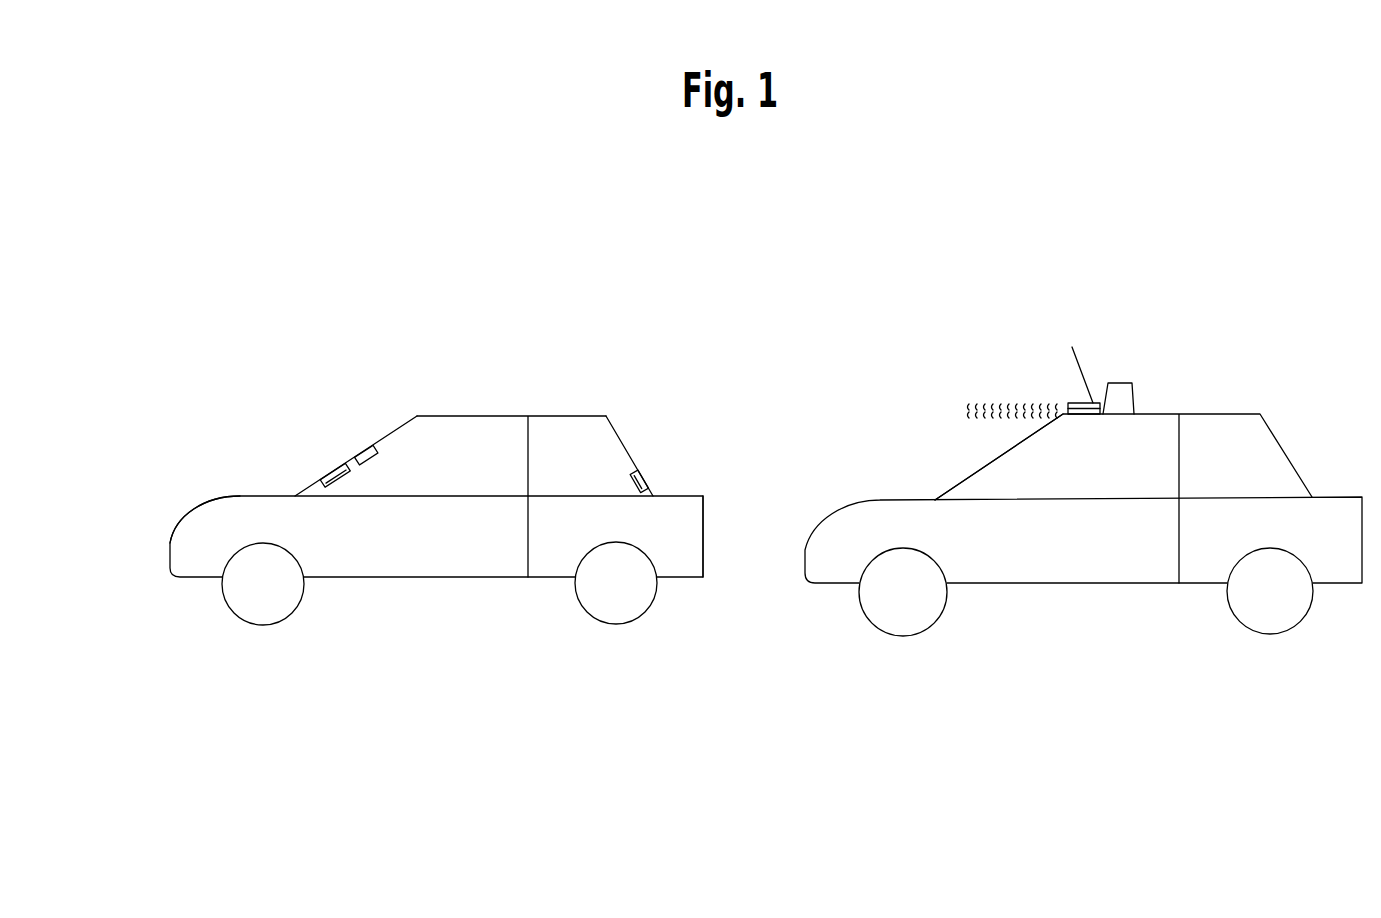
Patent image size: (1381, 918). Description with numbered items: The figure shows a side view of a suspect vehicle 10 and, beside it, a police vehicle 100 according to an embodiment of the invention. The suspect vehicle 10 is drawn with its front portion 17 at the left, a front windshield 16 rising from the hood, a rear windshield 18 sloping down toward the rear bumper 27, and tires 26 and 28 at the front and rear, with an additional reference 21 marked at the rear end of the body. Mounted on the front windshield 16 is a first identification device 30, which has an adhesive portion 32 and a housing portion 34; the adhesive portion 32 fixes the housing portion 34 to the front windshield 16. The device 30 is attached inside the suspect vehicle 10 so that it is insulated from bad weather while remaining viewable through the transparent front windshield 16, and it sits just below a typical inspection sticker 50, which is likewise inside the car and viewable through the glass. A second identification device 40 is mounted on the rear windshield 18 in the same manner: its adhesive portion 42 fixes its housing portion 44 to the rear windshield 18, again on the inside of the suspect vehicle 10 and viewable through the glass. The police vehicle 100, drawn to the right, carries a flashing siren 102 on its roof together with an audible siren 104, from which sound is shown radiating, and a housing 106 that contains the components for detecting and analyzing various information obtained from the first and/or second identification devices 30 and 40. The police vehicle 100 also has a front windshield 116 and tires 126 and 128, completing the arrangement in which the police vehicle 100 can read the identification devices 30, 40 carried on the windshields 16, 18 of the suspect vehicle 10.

The suspect vehicle 10 is at (431, 501).
The front windshield 16 is at (403, 422).
The front portion 17 is at (173, 535).
The rear windshield 18 is at (628, 433).
The rear bumper 21 is at (703, 540).
The tire 26 is at (252, 610).
The rear bumper 27 is at (450, 543).
The tire 28 is at (617, 607).
The first identification device 30 is at (321, 445).
The adhesive portion 32 is at (320, 478).
The housing portion 34 is at (340, 482).
The second identification device 40 is at (647, 457).
The adhesive portion 42 is at (640, 473).
The housing portion 44 is at (630, 472).
The inspection sticker 50 is at (363, 452).
The police vehicle 100 is at (1063, 495).
The flashing siren 102 is at (1128, 382).
The audible siren 104 is at (1057, 403).
The housing 106 is at (1080, 413).
The front windshield 116 is at (992, 455).
The tire 126 is at (906, 612).
The tire 128 is at (1275, 605).